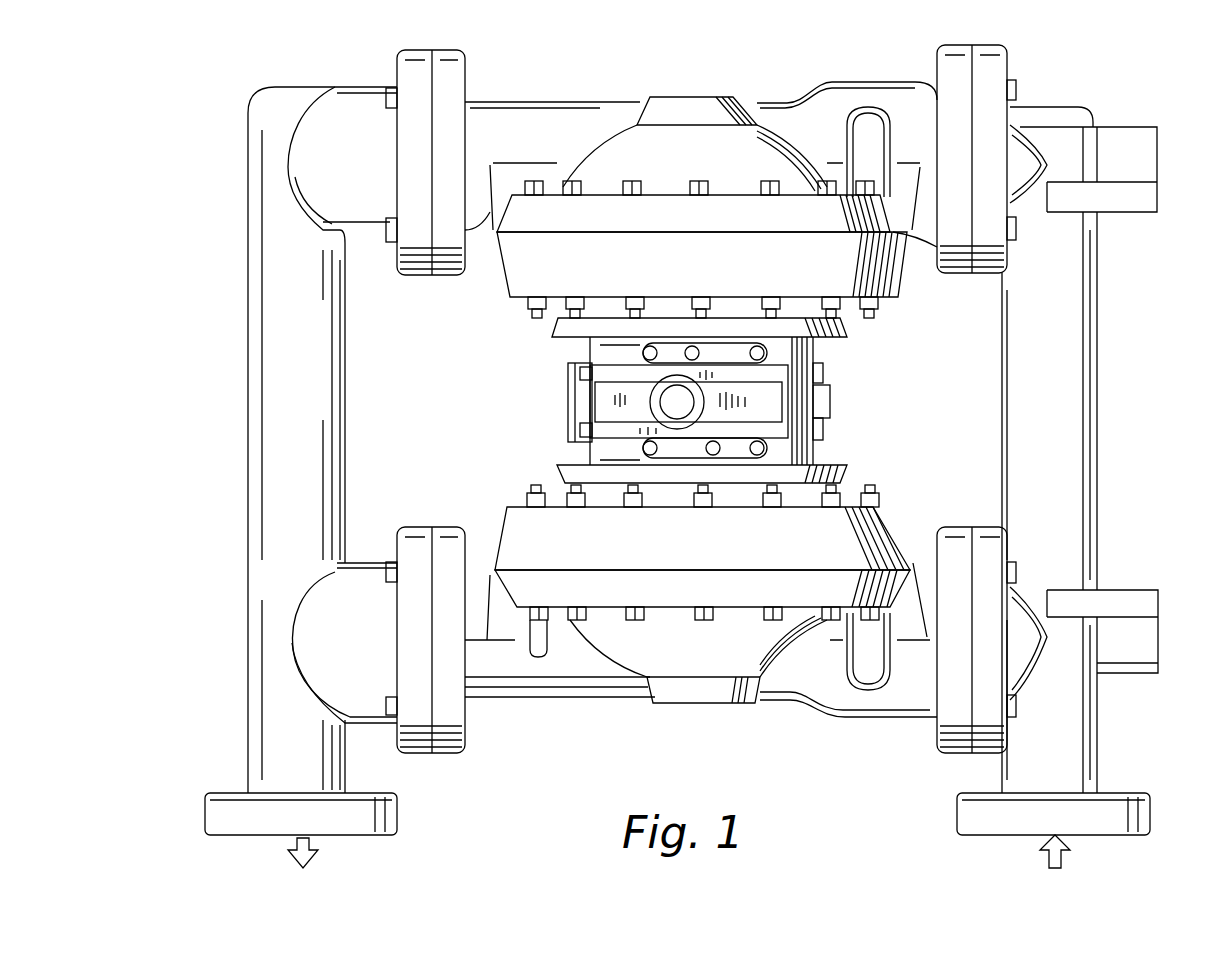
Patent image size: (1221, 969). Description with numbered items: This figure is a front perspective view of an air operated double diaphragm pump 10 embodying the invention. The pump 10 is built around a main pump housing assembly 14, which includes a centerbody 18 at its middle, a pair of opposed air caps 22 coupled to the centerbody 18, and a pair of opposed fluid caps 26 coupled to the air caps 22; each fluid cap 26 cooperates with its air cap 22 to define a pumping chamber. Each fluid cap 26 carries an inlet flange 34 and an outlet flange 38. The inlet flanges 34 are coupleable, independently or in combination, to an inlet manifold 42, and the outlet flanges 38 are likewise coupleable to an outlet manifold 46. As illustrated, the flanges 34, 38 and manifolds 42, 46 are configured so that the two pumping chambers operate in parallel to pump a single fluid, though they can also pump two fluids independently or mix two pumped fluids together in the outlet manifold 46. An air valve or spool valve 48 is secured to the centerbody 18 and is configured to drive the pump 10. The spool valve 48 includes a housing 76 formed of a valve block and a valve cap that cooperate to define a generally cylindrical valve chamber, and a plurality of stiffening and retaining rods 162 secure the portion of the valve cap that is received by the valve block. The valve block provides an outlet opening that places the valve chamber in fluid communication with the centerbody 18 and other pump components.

The air operated double diaphragm pump 10 is at (218, 109).
The main pump housing assembly 14 is at (714, 102).
The centerbody 18 is at (798, 348).
The air caps 22 is at (527, 282).
The fluid caps 26 is at (636, 140).
The inlet flange 34 is at (947, 63).
The outlet flange 38 is at (453, 70).
The inlet manifold 42 is at (1072, 377).
The outlet manifold 46 is at (262, 364).
The spool valve 48 is at (611, 451).
The housing 76 is at (770, 372).
The stiffening and retaining rods 162 is at (578, 385).